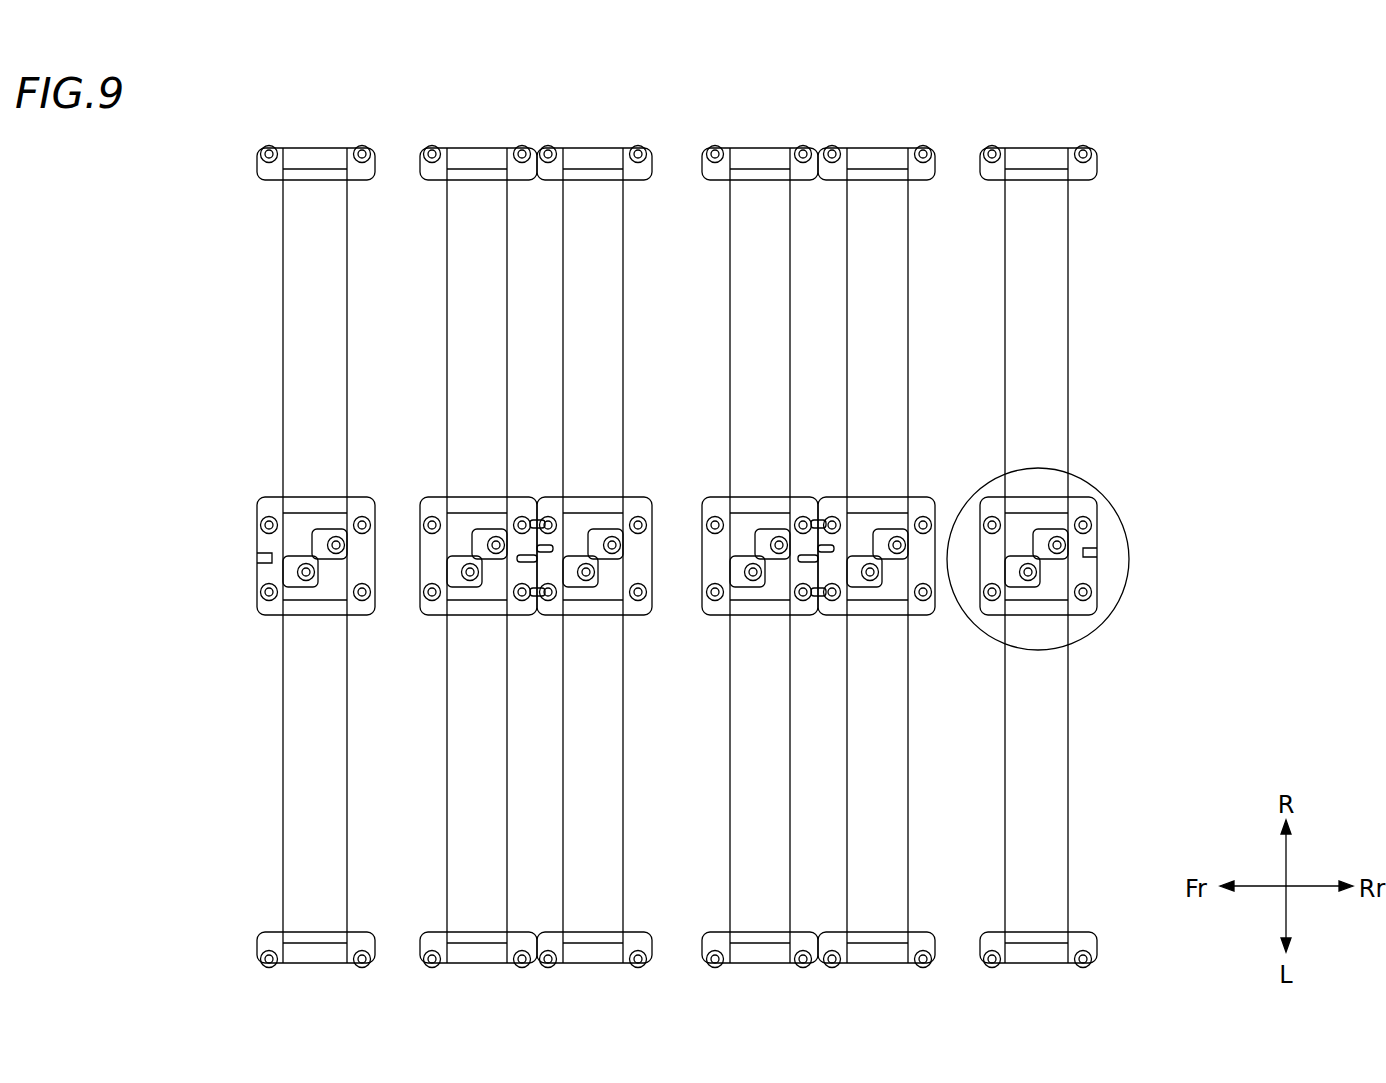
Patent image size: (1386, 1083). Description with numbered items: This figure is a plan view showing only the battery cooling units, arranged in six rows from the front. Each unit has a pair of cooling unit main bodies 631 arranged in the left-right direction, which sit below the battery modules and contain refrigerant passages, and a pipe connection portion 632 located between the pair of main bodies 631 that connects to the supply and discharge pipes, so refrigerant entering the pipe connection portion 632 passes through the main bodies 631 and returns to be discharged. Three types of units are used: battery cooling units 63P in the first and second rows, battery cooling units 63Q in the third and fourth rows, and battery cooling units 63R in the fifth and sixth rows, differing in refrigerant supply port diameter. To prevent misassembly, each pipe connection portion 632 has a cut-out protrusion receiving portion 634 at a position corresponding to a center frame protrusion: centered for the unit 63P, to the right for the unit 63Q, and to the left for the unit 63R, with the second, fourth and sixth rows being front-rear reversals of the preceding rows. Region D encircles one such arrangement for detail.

The battery cooling unit 63P is at (478, 192).
The battery cooling unit 63Q is at (760, 192).
The battery cooling unit 63R is at (1040, 192).
The cooling unit main body 631 is at (335, 297).
The pipe connection portion 632 is at (301, 530).
The protrusion receiving portion 634 is at (257, 567).
The detail region D is at (1108, 497).